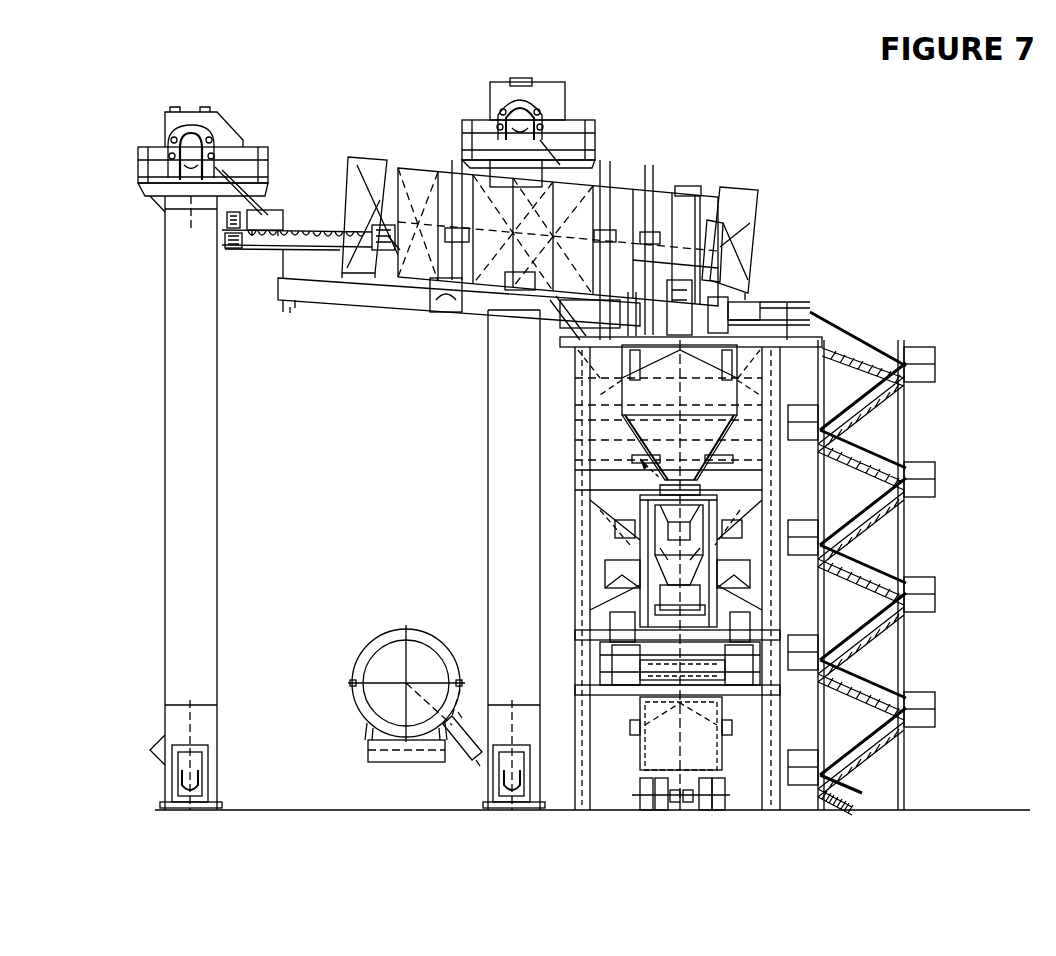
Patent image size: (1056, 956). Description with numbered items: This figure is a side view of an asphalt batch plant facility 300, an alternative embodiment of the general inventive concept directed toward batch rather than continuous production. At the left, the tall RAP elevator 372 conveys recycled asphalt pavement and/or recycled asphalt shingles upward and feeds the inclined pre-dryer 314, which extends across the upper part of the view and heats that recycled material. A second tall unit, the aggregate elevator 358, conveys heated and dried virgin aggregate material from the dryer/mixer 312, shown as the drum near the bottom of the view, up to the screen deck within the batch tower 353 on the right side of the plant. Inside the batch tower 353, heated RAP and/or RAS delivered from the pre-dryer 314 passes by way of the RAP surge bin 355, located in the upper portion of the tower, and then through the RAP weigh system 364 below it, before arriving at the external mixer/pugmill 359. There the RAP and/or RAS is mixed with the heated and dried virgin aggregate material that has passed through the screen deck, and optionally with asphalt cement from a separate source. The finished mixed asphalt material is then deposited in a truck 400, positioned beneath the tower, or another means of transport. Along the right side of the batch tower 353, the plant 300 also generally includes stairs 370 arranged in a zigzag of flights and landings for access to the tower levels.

The batch plant facility 300 is at (355, 66).
The dryer/mixer 312 is at (393, 635).
The pre-dryer 314 is at (685, 186).
The batch tower 353 is at (803, 370).
The RAP surge bin 355 is at (735, 372).
The aggregate elevator 358 is at (570, 104).
The external mixer/pugmill 359 is at (570, 643).
The RAP weigh system 364 is at (632, 598).
The stairs 370 is at (905, 456).
The RAP elevator 372 is at (218, 410).
The truck 400 is at (630, 768).